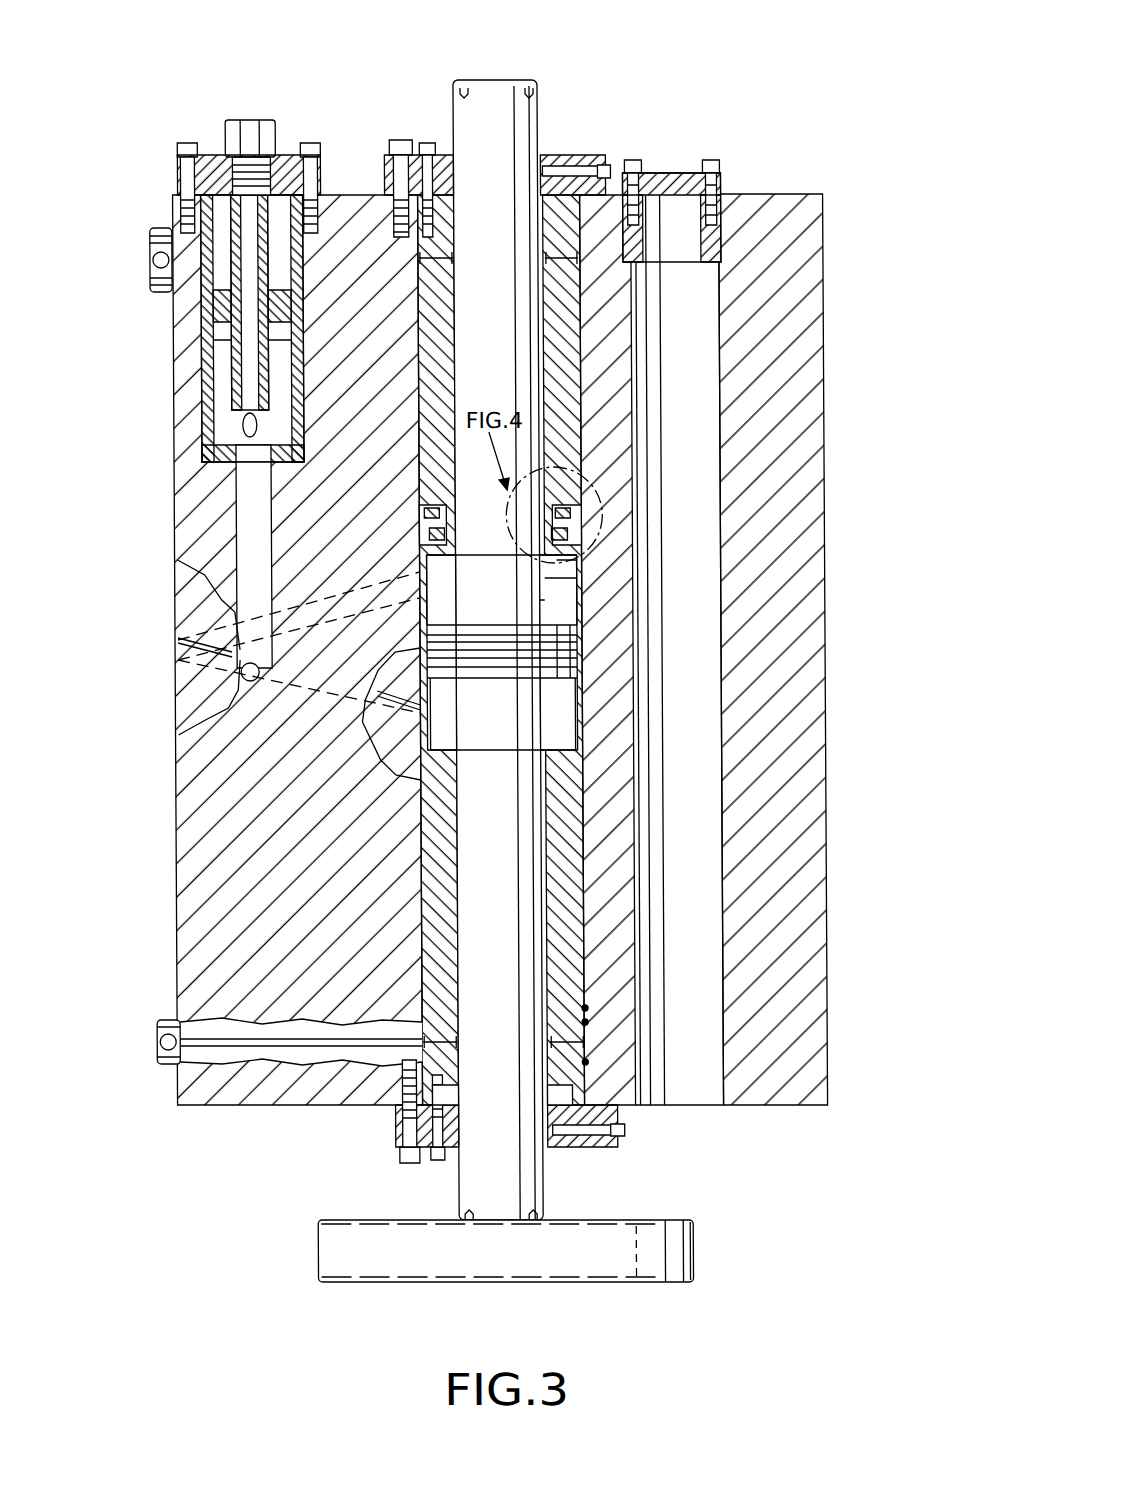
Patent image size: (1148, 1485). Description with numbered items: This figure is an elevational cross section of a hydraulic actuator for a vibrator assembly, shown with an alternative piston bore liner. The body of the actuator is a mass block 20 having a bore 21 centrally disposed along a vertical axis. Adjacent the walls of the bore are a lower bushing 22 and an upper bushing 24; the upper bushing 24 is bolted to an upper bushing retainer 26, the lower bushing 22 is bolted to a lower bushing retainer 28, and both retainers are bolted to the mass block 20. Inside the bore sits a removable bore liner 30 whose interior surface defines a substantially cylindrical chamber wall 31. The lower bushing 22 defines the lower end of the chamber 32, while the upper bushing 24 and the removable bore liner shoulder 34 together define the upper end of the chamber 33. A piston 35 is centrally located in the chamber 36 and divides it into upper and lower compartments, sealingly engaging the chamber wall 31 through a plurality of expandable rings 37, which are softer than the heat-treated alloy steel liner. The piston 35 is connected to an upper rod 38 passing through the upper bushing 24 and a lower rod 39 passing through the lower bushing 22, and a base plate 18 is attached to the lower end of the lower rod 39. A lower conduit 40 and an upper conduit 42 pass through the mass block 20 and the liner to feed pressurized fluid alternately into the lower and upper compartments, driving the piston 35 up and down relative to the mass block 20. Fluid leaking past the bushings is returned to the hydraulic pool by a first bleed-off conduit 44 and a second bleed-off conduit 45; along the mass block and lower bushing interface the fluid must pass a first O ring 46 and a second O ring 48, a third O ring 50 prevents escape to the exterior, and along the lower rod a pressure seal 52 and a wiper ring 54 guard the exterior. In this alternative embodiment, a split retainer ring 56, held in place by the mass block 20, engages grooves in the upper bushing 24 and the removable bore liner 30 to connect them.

The base plate 18 is at (310, 1284).
The mass block 20 is at (791, 186).
The bore 21 is at (492, 125).
The lower bushing 22 is at (420, 882).
The upper bushing 24 is at (588, 372).
The upper bushing retainer 26 is at (582, 153).
The lower bushing retainer 28 is at (393, 1130).
The removable bore liner 30 is at (583, 547).
The chamber wall 31 is at (580, 697).
The lower end of the chamber 32 is at (513, 659).
The upper end of the chamber 33 is at (450, 556).
The removable bore liner shoulder 34 is at (560, 572).
The piston 35 is at (420, 598).
The chamber 36 is at (557, 578).
The expandable rings 37 is at (430, 650).
The upper rod 38 is at (543, 603).
The lower rod 39 is at (548, 843).
The lower conduit 40 is at (397, 712).
The upper conduit 42 is at (320, 608).
The first bleed-off conduit 44 is at (235, 1046).
The second bleed-off conduit 45 is at (578, 260).
The first O ring 46 is at (585, 1008).
The second O ring 48 is at (585, 1022).
The third O ring 50 is at (585, 1062).
The pressure seal 52 is at (565, 1147).
The wiper ring 54 is at (618, 1145).
The split retainer ring 56 is at (582, 508).